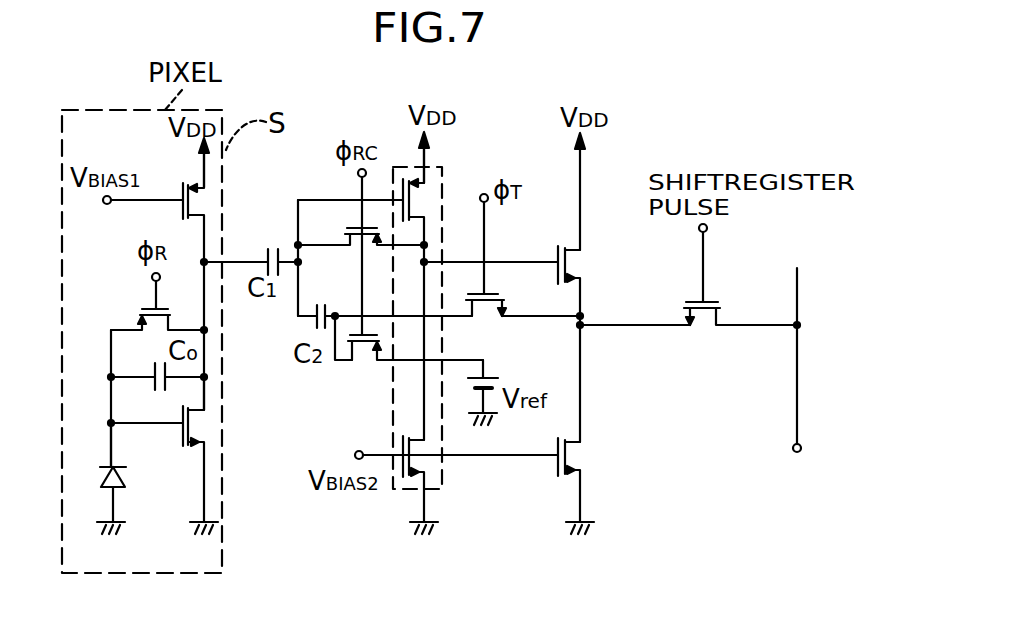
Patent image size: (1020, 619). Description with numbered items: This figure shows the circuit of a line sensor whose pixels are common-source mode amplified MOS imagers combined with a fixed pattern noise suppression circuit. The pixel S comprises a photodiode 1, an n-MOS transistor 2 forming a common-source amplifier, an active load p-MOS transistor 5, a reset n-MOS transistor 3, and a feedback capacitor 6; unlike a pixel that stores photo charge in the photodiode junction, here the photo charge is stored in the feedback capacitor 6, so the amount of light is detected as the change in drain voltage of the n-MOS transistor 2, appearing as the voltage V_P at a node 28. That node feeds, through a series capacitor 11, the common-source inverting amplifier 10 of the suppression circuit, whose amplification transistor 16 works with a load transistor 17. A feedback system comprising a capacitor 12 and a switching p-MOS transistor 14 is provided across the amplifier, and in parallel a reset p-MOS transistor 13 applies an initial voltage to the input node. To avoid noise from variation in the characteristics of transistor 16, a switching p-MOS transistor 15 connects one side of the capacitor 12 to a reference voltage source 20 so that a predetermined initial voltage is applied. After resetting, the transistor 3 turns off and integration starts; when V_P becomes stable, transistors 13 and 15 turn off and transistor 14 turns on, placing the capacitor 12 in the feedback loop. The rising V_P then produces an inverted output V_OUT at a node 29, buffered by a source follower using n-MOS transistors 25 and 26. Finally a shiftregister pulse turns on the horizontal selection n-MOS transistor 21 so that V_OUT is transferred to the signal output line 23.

The photodiode 1 is at (95, 483).
The n-MOS transistor 2 is at (206, 420).
The reset n-MOS transistor 3 is at (140, 318).
The active load p-MOS transistor 5 is at (212, 200).
The feedback capacitor 6 is at (150, 388).
The common-source inverting amplifier 10 is at (441, 489).
The capacitor 11 is at (268, 246).
The capacitor 12 is at (310, 325).
The reset p-MOS transistor 13 is at (356, 250).
The switching p-MOS transistor 14 is at (486, 316).
The switching p-MOS transistor 15 is at (365, 358).
The amplification transistor 16 is at (418, 200).
The load transistor 17 is at (430, 453).
The reference voltage (Vref) source 20 is at (505, 380).
The horizontal selection transistor 21 is at (707, 332).
The signal output line 23 is at (797, 395).
The n-MOS transistor 25 is at (582, 457).
The n-MOS transistor 26 is at (577, 258).
The node 28 is at (206, 365).
The node 29 is at (582, 367).